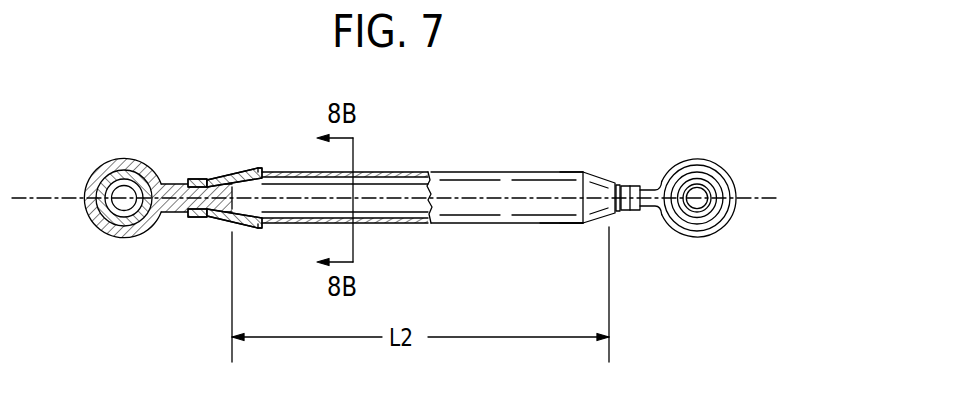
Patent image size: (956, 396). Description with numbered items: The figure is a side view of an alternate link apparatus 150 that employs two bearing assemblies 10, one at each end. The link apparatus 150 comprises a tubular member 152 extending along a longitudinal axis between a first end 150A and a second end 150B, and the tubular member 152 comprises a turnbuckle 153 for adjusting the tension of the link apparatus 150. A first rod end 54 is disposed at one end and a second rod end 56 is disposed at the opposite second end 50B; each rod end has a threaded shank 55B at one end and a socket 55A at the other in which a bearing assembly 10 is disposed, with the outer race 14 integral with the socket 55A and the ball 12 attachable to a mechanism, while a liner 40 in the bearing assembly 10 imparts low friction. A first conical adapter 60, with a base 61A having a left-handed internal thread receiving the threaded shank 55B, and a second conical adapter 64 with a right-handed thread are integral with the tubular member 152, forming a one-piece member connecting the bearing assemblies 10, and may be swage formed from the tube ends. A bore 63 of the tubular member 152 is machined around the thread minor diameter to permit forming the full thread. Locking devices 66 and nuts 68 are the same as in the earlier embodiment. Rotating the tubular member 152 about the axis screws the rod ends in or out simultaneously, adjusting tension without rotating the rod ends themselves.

The bearing assembly 10 is at (78, 177).
The ball 12 is at (93, 216).
The outer race 14 is at (104, 164).
The liner 40 is at (142, 170).
The first rod end 54 is at (177, 213).
The socket 55A is at (115, 243).
The threaded shank 55B is at (196, 179).
The second rod end 56 is at (654, 208).
The first conical adapter 60 is at (241, 180).
The base 61A is at (199, 218).
The bore 63 is at (276, 203).
The second conical adapter 64 is at (603, 182).
The locking device 66 is at (618, 212).
The nut 68 is at (639, 180).
The link apparatus 150 is at (425, 195).
The first end 150A is at (259, 162).
The second end 150B is at (551, 164).
The tubular member 152 is at (446, 172).
The turnbuckle 153 is at (514, 166).
The second end 50B is at (556, 232).